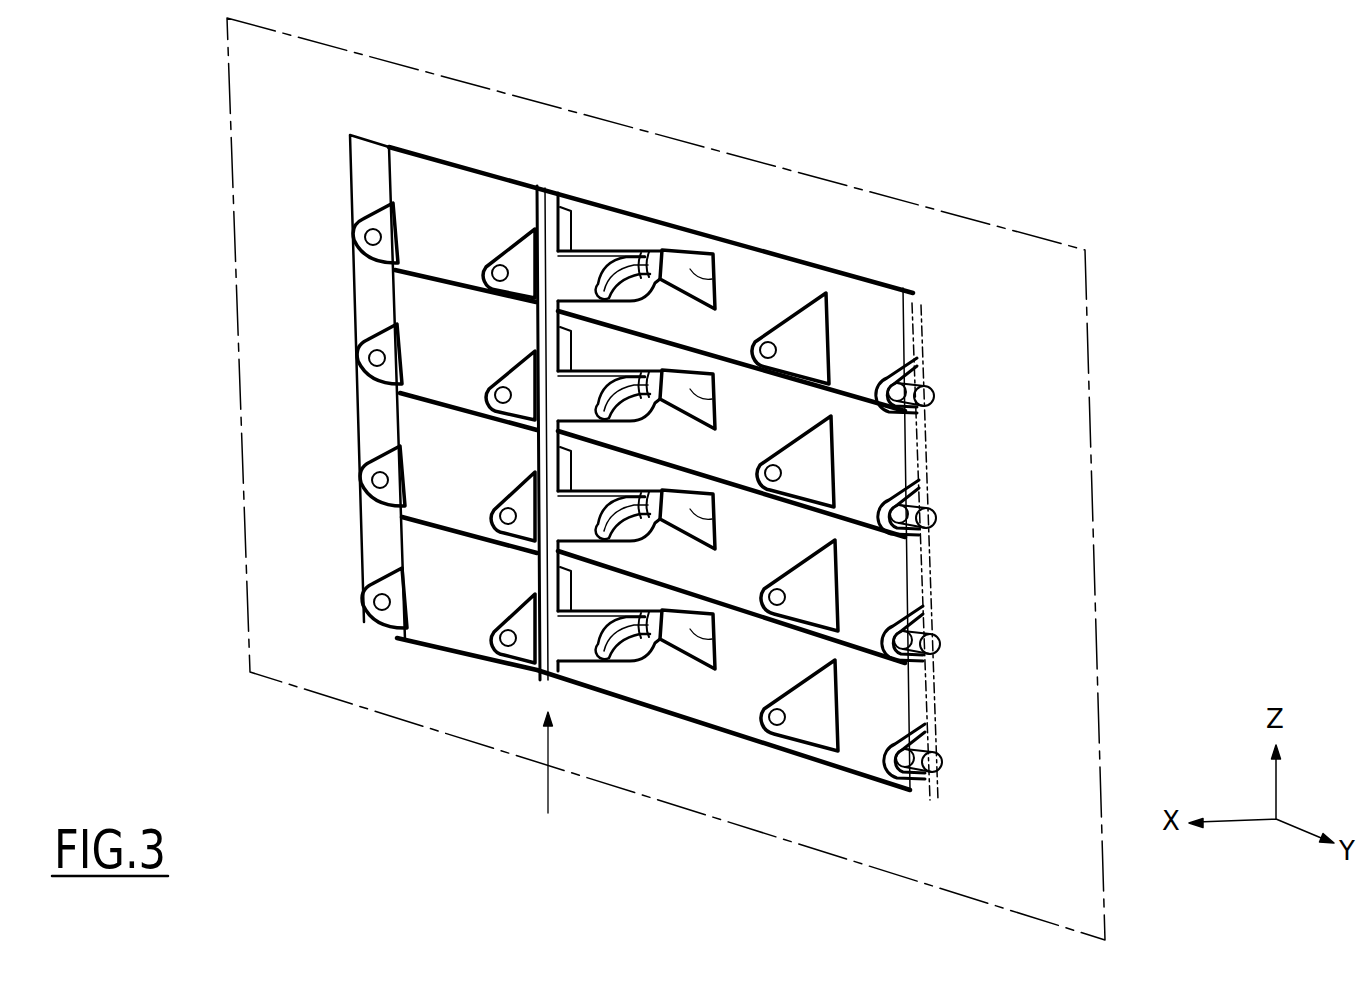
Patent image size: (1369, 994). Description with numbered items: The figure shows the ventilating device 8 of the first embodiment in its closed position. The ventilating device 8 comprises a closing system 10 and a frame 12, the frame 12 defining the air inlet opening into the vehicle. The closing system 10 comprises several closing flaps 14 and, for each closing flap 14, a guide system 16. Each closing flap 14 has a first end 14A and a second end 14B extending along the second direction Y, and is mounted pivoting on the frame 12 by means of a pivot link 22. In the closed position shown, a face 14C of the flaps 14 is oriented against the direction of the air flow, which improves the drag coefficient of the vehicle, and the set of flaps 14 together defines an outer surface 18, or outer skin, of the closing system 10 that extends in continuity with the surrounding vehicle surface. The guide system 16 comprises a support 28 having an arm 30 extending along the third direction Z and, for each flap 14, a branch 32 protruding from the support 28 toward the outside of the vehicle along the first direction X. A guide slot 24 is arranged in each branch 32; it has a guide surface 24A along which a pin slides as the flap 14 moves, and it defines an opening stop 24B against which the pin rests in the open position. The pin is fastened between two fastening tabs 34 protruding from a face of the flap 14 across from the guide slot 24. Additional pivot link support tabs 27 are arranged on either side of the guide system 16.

The ventilating device 8 is at (905, 131).
The closing system 10 is at (434, 178).
The frame 12 is at (372, 142).
The closing flap 14 is at (912, 312).
The first end 14A is at (366, 181).
The second end 14B is at (945, 361).
The face 14C is at (508, 178).
The guide system 16 is at (546, 778).
The outer surface 18 is at (972, 482).
The pivot link 22 is at (398, 232).
The guide slot 24 is at (640, 650).
The guide surface 24A is at (648, 504).
The opening stop 24B is at (617, 655).
The pivot link support tabs 27 is at (508, 350).
The support 28 is at (522, 532).
The arm 30 is at (548, 567).
The branch 32 is at (572, 397).
The fastening tabs 34 is at (688, 277).